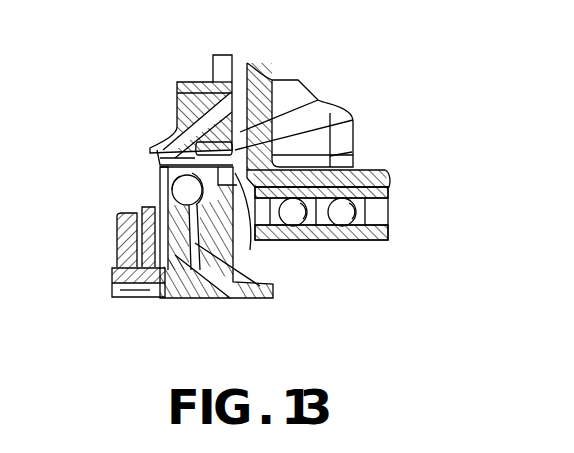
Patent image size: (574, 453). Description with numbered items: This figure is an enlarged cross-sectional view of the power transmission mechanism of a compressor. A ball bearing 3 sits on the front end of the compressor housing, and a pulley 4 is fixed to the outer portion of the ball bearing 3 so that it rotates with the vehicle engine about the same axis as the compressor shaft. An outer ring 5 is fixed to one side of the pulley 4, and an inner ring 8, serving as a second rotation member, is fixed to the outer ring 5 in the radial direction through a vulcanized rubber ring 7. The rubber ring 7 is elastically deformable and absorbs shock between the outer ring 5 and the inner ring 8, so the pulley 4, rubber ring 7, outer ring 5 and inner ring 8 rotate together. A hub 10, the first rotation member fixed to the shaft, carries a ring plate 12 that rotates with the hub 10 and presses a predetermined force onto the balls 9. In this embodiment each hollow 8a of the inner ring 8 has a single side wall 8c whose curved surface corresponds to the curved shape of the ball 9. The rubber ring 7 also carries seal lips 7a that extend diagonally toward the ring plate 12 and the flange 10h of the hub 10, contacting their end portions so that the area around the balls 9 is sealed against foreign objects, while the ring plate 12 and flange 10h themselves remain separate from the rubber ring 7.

The ball bearing 3 is at (380, 210).
The pulley 4 is at (298, 80).
The outer ring 5 is at (197, 82).
The rubber ring 7 is at (188, 115).
The seal lip 7a is at (352, 152).
The inner ring 8 is at (157, 150).
The hollow 8a is at (318, 100).
The side wall 8c is at (353, 120).
The ball 9 is at (170, 182).
The hub 10 is at (207, 277).
The flange 10h is at (251, 221).
The ring plate 12 is at (150, 200).